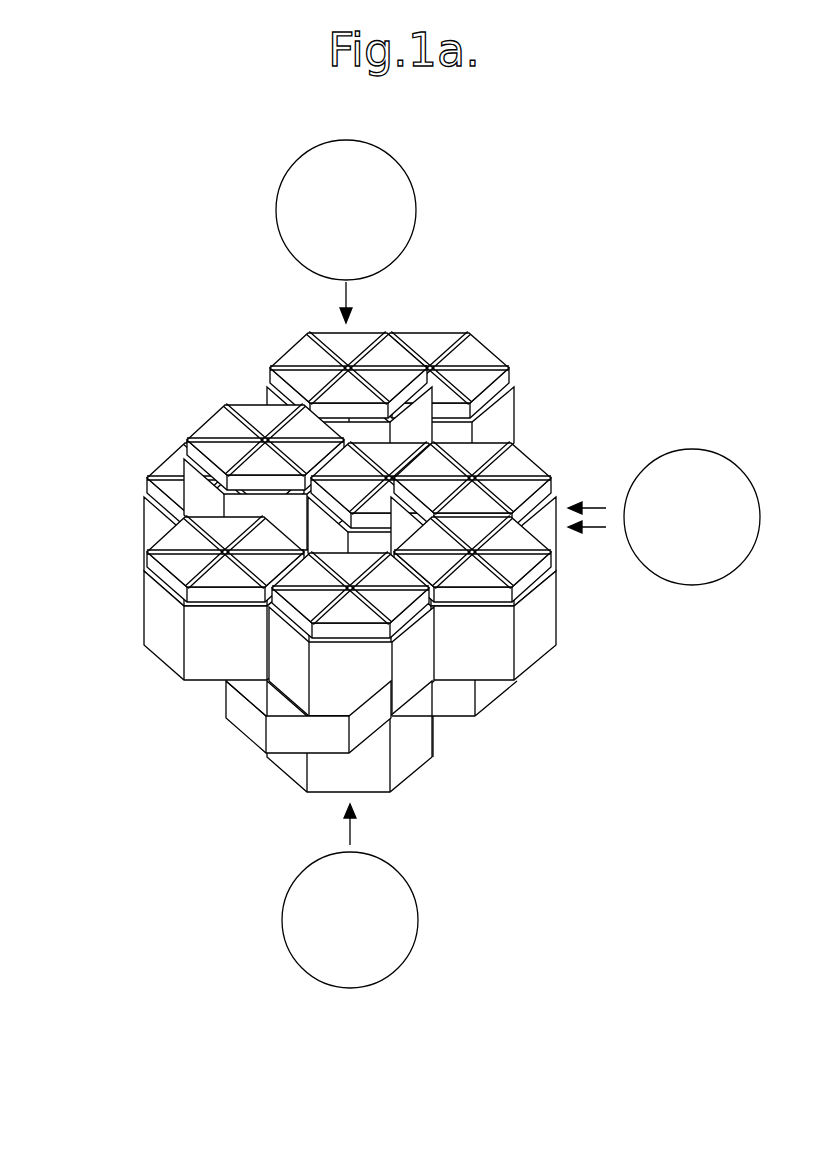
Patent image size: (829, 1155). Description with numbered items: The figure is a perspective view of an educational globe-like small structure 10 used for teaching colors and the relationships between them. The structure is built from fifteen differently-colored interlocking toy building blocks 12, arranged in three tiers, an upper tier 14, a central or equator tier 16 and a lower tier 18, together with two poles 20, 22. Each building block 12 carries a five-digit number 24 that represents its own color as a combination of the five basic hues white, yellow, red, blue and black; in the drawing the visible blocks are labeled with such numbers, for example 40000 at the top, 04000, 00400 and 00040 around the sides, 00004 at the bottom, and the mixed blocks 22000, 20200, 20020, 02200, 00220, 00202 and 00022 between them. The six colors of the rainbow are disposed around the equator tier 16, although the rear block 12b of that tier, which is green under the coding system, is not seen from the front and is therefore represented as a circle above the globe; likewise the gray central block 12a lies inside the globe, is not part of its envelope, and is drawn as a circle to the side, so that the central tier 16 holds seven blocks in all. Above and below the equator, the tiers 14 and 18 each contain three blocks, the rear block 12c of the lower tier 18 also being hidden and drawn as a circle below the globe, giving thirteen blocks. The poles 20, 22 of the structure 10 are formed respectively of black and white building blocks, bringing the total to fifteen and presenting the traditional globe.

The educational globe-like small structure 10 is at (379, 545).
The interlocking toy building block 12 is at (162, 631).
The central block 12a is at (712, 449).
The rear block of central tier 12b is at (290, 180).
The rear block of lower tier 12c is at (292, 893).
The upper tier 14 is at (172, 432).
The central tier 16 is at (126, 597).
The lower tier 18 is at (520, 700).
The pole 20 is at (370, 325).
The pole 22 is at (370, 800).
The number 24 is at (226, 316).
The puzzle piece 40000 is at (303, 356).
The puzzle piece 04000 is at (514, 466).
The puzzle piece 00400 is at (330, 663).
The puzzle piece 00040 is at (172, 470).
The puzzle piece 00004 is at (370, 768).
The puzzle piece 22000 is at (442, 386).
The puzzle piece 20200 is at (437, 447).
The puzzle piece 20020 is at (228, 425).
The puzzle piece 02200 is at (527, 613).
The puzzle piece 00220 is at (197, 561).
The puzzle piece 00202 is at (440, 688).
The puzzle piece 00022 is at (288, 727).